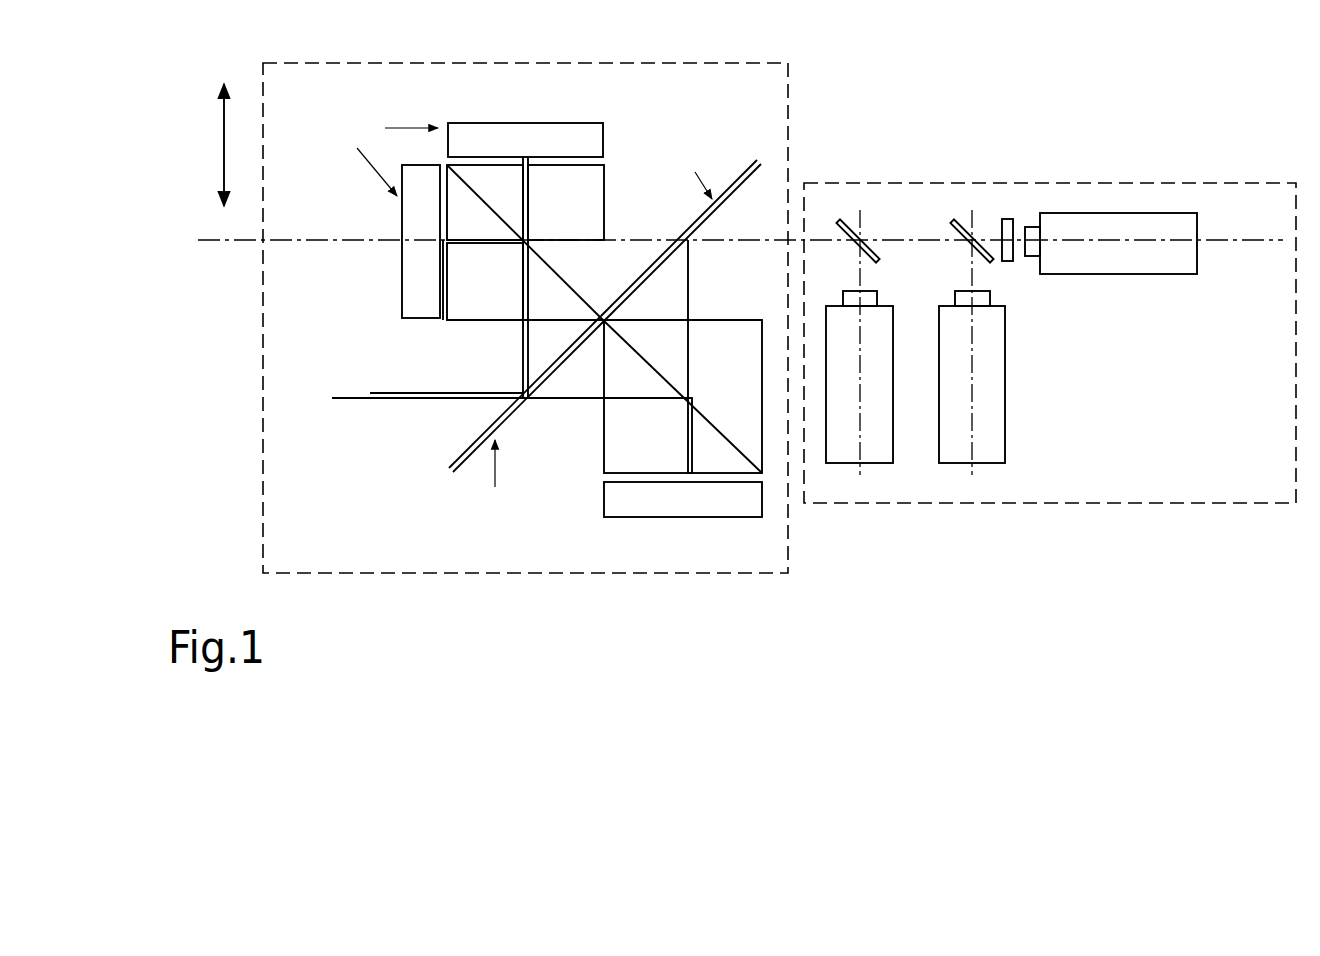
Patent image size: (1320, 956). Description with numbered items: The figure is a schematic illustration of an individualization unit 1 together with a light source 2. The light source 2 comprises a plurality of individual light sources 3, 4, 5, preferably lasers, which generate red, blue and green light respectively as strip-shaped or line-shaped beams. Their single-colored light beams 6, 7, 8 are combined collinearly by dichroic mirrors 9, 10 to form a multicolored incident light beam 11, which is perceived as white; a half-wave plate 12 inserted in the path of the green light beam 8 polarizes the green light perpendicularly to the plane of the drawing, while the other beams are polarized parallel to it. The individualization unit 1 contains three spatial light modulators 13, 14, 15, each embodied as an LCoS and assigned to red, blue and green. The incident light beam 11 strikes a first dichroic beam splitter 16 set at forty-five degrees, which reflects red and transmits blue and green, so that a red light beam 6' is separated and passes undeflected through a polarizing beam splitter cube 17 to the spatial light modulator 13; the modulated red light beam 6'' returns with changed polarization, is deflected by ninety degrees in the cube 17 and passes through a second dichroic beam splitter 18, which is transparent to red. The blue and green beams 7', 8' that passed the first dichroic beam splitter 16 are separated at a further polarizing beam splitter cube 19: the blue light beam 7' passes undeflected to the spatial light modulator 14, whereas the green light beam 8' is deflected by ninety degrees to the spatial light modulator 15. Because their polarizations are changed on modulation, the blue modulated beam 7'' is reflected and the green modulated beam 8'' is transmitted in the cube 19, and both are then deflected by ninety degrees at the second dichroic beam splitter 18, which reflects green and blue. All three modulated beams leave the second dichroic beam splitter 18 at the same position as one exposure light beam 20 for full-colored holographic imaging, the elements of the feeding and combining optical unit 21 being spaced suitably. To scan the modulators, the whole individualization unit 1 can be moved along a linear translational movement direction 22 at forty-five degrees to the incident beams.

The individualization unit 1 is at (790, 98).
The light source 2 is at (1268, 183).
The individual light source 3 is at (885, 465).
The individual light source 4 is at (990, 465).
The individual light source 5 is at (1143, 275).
The single-colored red light beam 6 is at (884, 342).
The single-colored blue light beam 7 is at (992, 342).
The single-colored green light beam 8 is at (1041, 198).
The dichroic mirror 9 is at (847, 220).
The dichroic mirror 10 is at (958, 222).
The multicolored incident light beam 11 is at (792, 237).
The half-wave plate 12 is at (1012, 262).
The spatial light modulator 13 is at (703, 518).
The spatial light modulator 14 is at (412, 213).
The spatial light modulator 15 is at (523, 134).
The first dichroic beam splitter 16 is at (738, 177).
The polarizing beam splitter cube 17 is at (762, 478).
The second dichroic beam splitter 18 is at (463, 474).
The further polarizing beam splitter cube 19 is at (592, 208).
The exposure light beam 20 is at (385, 395).
The feeding and combining optical unit 21 is at (428, 454).
The linear translational movement direction 22 is at (222, 156).
The single-colored red light beam 6' is at (712, 356).
The individually modulated red light beam 6'' is at (582, 390).
The single-colored blue light beam 7' is at (485, 215).
The individually modulated blue light beam 7'' is at (474, 318).
The single-colored green light beam 8' is at (508, 202).
The individually modulated green light beam 8'' is at (559, 277).